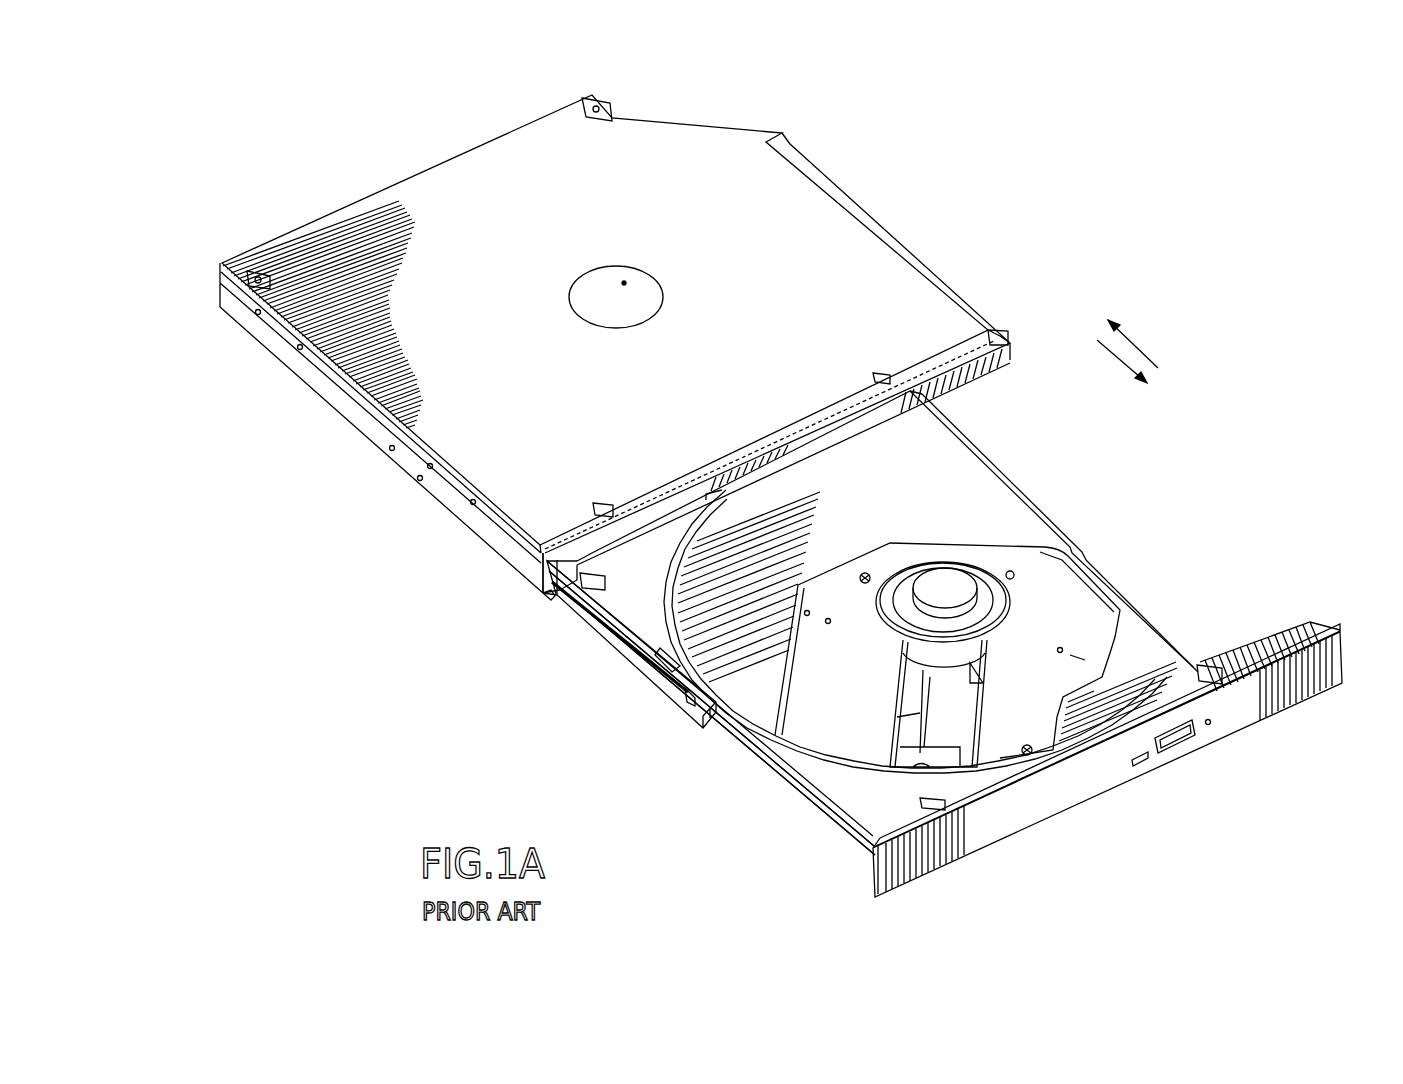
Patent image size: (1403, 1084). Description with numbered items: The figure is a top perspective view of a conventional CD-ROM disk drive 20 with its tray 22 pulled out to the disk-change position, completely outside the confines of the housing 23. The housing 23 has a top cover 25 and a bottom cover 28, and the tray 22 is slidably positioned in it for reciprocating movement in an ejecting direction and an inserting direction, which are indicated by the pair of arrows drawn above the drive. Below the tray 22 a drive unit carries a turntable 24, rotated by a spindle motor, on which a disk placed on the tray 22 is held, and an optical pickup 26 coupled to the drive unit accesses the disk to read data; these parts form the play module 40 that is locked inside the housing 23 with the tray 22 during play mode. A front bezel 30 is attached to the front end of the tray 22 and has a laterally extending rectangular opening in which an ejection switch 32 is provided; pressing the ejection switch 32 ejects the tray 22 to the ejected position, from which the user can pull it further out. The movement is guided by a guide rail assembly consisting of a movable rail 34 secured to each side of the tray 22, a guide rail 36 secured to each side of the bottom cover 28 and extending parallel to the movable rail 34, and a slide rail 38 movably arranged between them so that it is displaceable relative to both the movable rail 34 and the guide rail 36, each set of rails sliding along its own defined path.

The CD-ROM disk drive 20 is at (781, 499).
The tray 22 is at (863, 797).
The housing 23 is at (508, 457).
The turntable 24 is at (947, 590).
The top cover 25 is at (762, 297).
The optical pickup 26 is at (948, 725).
The bottom cover 28 is at (365, 427).
The front bezel 30 is at (1045, 812).
The ejection switch 32 is at (1177, 743).
The movable rail 34 is at (767, 783).
The guide rail 36 is at (552, 595).
The slide rail 38 is at (602, 645).
The play module 40 is at (1083, 603).